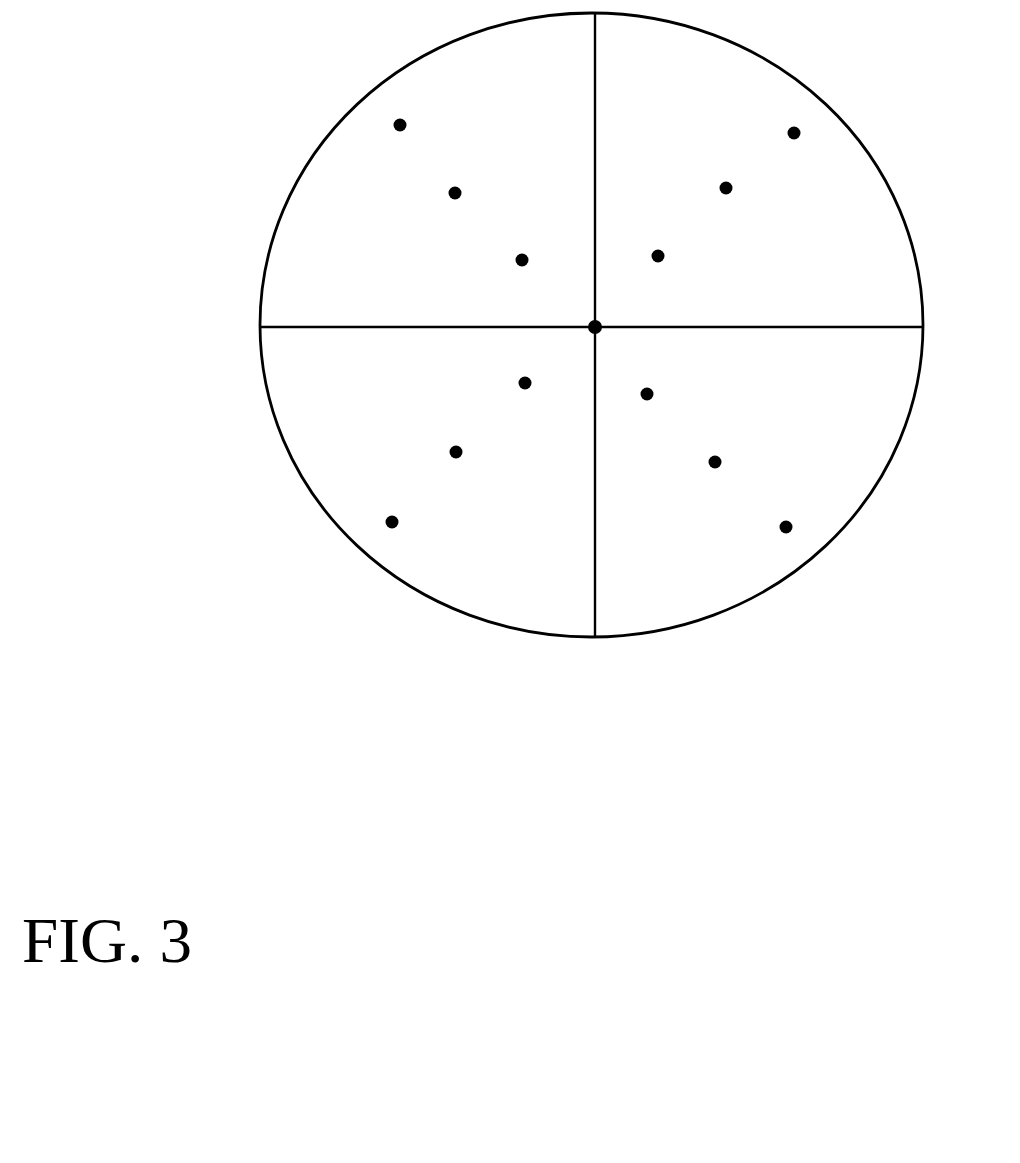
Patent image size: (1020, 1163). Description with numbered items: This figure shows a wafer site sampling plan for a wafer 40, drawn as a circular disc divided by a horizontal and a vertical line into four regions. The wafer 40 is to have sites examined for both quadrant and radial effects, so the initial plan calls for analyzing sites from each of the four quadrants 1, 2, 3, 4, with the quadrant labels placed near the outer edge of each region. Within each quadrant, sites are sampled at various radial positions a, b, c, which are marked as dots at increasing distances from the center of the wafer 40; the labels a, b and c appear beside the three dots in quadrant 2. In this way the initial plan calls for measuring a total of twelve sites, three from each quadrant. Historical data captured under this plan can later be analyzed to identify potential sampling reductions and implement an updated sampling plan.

The wafer 40 is at (307, 185).
The quadrant 1 is at (761, 208).
The quadrant 2 is at (753, 449).
The quadrant 3 is at (431, 447).
The quadrant 4 is at (428, 203).
The radial position a is at (797, 506).
The radial position b is at (691, 476).
The radial position c is at (667, 382).